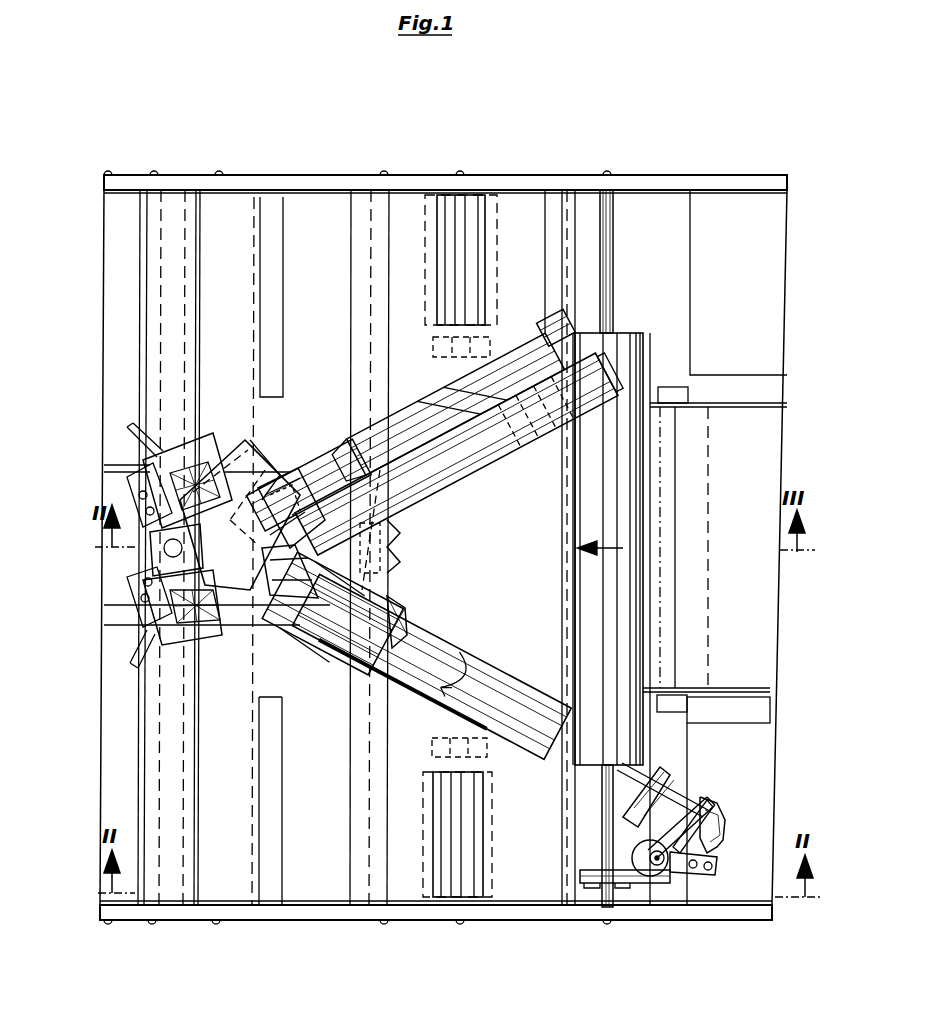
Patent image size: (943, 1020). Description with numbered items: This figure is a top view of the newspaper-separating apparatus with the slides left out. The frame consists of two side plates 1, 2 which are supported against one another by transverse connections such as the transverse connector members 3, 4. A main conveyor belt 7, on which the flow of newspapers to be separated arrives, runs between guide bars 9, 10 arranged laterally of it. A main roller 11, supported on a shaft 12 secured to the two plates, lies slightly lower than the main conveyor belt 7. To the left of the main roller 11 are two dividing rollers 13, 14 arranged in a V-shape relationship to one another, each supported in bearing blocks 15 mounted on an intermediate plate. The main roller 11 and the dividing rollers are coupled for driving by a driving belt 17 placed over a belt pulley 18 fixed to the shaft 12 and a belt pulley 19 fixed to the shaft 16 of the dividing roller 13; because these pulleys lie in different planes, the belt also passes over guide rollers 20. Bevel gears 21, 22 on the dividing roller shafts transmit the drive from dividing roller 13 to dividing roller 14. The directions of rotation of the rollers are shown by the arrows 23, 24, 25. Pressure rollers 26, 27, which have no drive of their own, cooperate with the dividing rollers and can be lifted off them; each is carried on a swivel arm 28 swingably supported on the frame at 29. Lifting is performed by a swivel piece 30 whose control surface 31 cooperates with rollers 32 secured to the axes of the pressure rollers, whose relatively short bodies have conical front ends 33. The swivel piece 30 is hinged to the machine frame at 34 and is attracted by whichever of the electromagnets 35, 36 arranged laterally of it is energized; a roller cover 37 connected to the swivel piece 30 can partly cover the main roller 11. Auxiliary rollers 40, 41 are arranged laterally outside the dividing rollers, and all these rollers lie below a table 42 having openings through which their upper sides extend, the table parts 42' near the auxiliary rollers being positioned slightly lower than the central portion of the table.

The side plate 1 is at (520, 921).
The side plate 2 is at (510, 188).
The transverse connector member 3 is at (274, 210).
The transverse connector member 4 is at (365, 208).
The main conveyor belt 7 is at (745, 611).
The guide bar 9 is at (748, 712).
The guide bar 10 is at (768, 393).
The main roller 11 is at (622, 370).
The shaft 12 is at (612, 240).
The dividing roller 13 is at (548, 585).
The dividing roller 14 is at (468, 485).
The bearing block 15 is at (552, 330).
The shaft 16 is at (680, 820).
The driving belt 17 is at (640, 877).
The belt pulley 18 is at (590, 885).
The belt pulley 19 is at (720, 808).
The guide roller 20 is at (660, 875).
The bevel gear 21 is at (282, 598).
The bevel gear 22 is at (308, 545).
The arrow 23 is at (590, 545).
The arrow 24 is at (485, 661).
The arrow 25 is at (456, 389).
The pressure roller 26 is at (340, 623).
The pressure roller 27 is at (335, 488).
The swivel arm 28 is at (372, 623).
The swivel support 29 is at (405, 548).
The swivel piece 30 is at (232, 440).
The control surface 31 is at (252, 468).
The roller 32 is at (280, 498).
The front end 33 is at (406, 612).
The hinge connection 34 is at (165, 548).
The electromagnet 35 is at (150, 440).
The electromagnet 36 is at (150, 630).
The roller cover 37 is at (580, 545).
The auxiliary roller 40 is at (450, 880).
The auxiliary roller 41 is at (462, 200).
The table 42 is at (527, 543).
The table part 42' is at (515, 528).